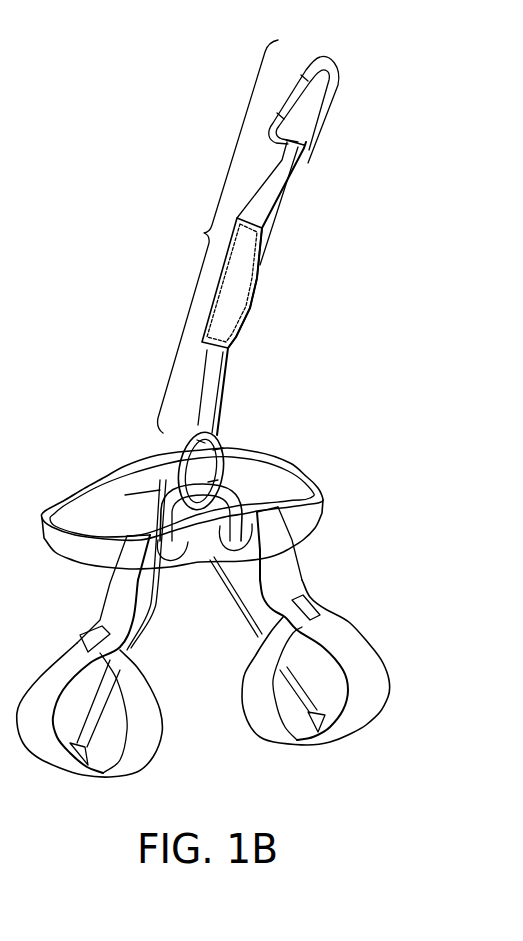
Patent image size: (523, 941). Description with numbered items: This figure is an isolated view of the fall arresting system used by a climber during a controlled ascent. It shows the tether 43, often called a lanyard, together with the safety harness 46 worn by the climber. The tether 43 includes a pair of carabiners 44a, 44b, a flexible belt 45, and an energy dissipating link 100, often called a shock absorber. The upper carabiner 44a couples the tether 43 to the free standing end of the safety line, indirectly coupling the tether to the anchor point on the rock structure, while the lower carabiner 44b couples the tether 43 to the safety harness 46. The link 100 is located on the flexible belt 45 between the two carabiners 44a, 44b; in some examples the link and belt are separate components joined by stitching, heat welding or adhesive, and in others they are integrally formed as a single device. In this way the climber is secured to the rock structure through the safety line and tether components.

The tether 43 is at (218, 236).
The carabiner 44a is at (338, 50).
The flexible belt 45 is at (275, 182).
The energy dissipating link 100 is at (270, 277).
The safety harness 46 is at (258, 449).
The carabiner 44b is at (220, 475).